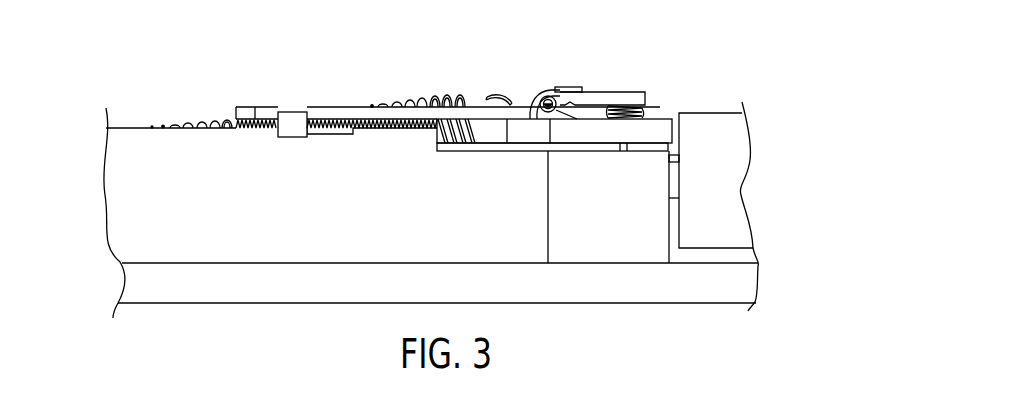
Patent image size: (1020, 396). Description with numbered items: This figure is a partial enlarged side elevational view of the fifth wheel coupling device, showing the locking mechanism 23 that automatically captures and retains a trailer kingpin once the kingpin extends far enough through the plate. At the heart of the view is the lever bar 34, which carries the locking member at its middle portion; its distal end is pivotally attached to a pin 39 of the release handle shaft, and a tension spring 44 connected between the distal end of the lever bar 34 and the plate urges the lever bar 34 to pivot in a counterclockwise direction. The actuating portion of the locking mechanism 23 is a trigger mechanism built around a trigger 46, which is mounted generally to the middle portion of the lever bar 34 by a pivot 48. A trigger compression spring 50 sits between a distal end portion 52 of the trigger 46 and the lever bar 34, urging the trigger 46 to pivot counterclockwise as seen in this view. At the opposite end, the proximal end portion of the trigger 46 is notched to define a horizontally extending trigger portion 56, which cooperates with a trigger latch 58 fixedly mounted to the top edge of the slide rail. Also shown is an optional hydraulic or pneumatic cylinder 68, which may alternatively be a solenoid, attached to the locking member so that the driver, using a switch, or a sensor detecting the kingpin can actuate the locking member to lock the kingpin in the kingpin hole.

The locking mechanism 23 is at (506, 76).
The lever bar 34 is at (639, 131).
The pin 39 is at (570, 87).
The tension spring 44 is at (438, 103).
The trigger 46 is at (480, 110).
The pivot 48 is at (546, 110).
The trigger compression spring 50 is at (643, 114).
The distal end portion 52 is at (617, 100).
The trigger portion 56 is at (297, 111).
The trigger latch 58 is at (290, 122).
The cylinder 68 is at (723, 169).